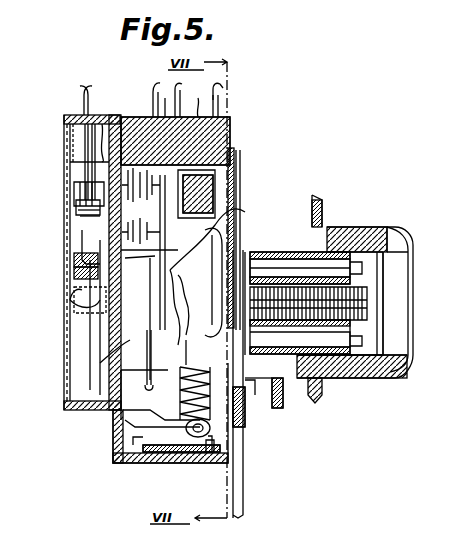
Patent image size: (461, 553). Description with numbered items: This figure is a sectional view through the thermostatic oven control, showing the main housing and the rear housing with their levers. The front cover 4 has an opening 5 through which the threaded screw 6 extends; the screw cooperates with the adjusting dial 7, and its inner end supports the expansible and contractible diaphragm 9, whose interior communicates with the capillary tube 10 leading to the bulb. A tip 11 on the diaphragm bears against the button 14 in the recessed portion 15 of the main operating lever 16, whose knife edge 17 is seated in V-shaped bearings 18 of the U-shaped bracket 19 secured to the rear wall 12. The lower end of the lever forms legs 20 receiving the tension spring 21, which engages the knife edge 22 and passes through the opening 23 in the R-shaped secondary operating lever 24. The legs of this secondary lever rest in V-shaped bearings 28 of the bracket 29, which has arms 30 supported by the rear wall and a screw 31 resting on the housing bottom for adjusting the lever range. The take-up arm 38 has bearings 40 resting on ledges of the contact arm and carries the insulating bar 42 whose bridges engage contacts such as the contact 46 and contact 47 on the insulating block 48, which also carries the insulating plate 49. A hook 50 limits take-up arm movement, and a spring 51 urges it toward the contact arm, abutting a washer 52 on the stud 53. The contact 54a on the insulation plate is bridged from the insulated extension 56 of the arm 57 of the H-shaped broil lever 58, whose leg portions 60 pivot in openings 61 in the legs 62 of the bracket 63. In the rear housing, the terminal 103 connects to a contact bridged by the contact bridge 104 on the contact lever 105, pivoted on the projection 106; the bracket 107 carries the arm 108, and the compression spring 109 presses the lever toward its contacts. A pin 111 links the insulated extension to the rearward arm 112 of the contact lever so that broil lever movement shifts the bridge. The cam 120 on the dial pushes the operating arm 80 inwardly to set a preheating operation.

The front cover 4 is at (241, 176).
The opening 5 is at (280, 262).
The threaded screw 6 is at (367, 300).
The adjusting dial 7 is at (345, 228).
The expansible and contractible diaphragm 9 is at (272, 393).
The capillary tube 10 is at (244, 490).
The tip 11 is at (217, 282).
The rear wall 12 is at (118, 418).
The button 14 is at (182, 298).
The recessed portion 15 is at (178, 285).
The main operating lever 16 is at (186, 326).
The knife edge 17 is at (163, 252).
The V-shaped bearings 18 is at (155, 262).
The U-shaped bracket 19 is at (103, 352).
The legs 20 is at (190, 355).
The tension spring 21 is at (246, 425).
The knife edge 22 is at (210, 430).
The opening 23 is at (272, 252).
The secondary operating lever 24 is at (295, 198).
The V-shaped bearings 28 is at (178, 423).
The bracket 29 is at (155, 452).
The arms 30 is at (113, 446).
The screw 31 is at (210, 455).
The take-up arm 38 is at (191, 107).
The bearings 40 is at (251, 407).
The insulating bar 42 is at (235, 165).
The contact 46 is at (219, 107).
The contact 47 is at (225, 92).
The insulating block 48 is at (231, 128).
The insulating plate 49 is at (163, 110).
The hook 50 is at (217, 236).
The spring 51 is at (186, 100).
The washer 52 is at (160, 220).
The stud 53 is at (215, 198).
The contact 54a is at (155, 92).
The insulated extension 56 is at (74, 195).
The arm 57 is at (160, 243).
The broil lever 58 is at (108, 362).
The leg portions 60 is at (159, 357).
The openings 61 is at (149, 388).
The legs 62 is at (144, 388).
The bracket 63 is at (110, 380).
The operating arm 80 is at (453, 298).
The terminal 103 is at (82, 100).
The contact bridge 104 is at (100, 116).
The contact lever 105 is at (78, 210).
The projection 106 is at (108, 340).
The bracket 107 is at (80, 318).
The arm 108 is at (74, 260).
The compression spring 109 is at (74, 272).
The pin 111 is at (80, 216).
The arm 112 is at (82, 236).
The cam 120 is at (322, 392).